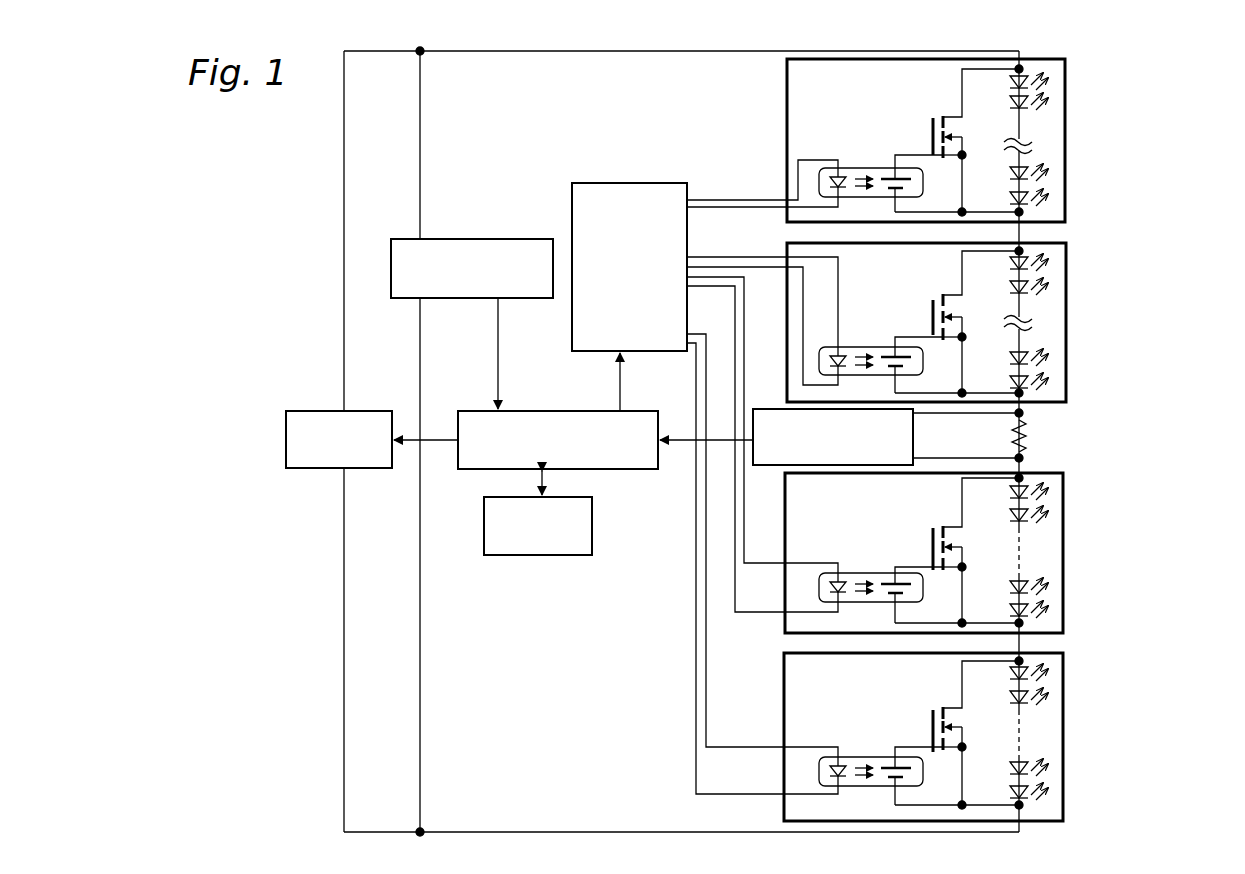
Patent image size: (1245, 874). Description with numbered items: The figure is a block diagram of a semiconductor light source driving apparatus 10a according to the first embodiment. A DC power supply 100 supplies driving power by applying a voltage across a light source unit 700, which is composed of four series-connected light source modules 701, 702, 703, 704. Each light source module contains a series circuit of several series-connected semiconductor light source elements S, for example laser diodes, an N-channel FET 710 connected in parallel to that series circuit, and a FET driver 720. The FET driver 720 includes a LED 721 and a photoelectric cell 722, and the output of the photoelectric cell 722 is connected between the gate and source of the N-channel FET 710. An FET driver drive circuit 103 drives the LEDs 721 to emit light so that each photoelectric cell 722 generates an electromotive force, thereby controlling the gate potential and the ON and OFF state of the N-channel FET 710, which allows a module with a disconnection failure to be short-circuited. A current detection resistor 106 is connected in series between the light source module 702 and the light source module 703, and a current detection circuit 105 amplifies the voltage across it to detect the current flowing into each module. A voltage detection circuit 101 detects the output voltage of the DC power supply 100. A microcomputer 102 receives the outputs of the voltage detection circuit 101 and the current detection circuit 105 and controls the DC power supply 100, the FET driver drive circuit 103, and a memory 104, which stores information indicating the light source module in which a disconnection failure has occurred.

The semiconductor light source driving apparatus 10a is at (277, 614).
The DC power supply 100 is at (356, 410).
The voltage detection circuit 101 is at (462, 239).
The microcomputer 102 is at (525, 410).
The FET driver drive circuit 103 is at (631, 183).
The memory 104 is at (594, 537).
The current detection circuit 105 is at (915, 444).
The current detection resistor 106 is at (1036, 433).
The light source unit 700 is at (1140, 59).
The light source module 701 is at (1067, 143).
The light source module 702 is at (1067, 298).
The light source module 703 is at (1064, 543).
The light source module 704 is at (1063, 718).
The N-channel FET 710 is at (927, 122).
The FET driver 720 is at (866, 167).
The LED 721 is at (824, 177).
The photoelectric cell 722 is at (908, 173).
The semiconductor light source element S is at (1050, 83).